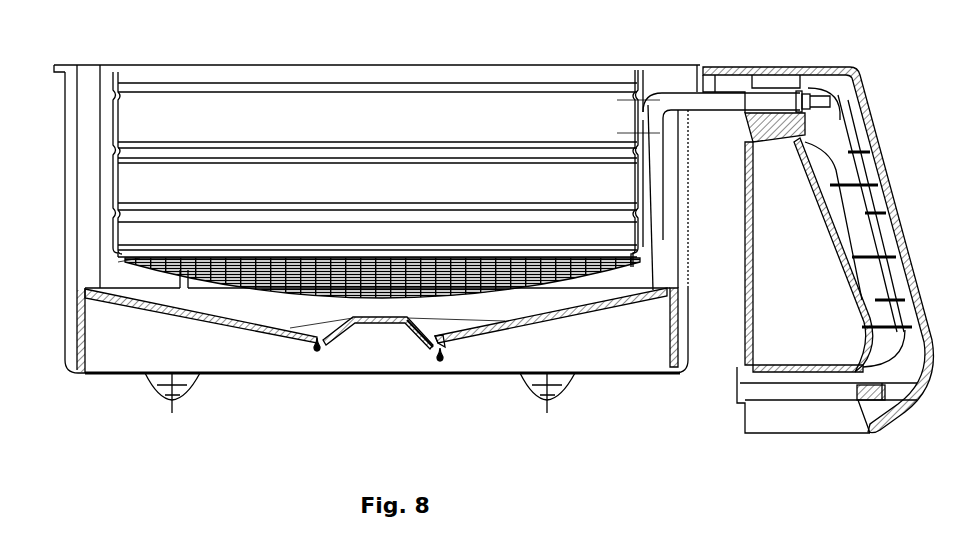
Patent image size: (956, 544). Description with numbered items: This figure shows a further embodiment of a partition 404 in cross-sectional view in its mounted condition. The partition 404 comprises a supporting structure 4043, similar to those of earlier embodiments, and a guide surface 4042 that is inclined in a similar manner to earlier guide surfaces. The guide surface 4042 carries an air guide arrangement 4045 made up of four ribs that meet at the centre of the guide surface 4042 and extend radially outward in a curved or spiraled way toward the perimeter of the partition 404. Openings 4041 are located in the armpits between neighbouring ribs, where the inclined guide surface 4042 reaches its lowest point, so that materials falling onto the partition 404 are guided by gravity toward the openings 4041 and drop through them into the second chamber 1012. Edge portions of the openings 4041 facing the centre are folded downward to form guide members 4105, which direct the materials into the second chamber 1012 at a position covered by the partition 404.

The partition 404 is at (353, 297).
The second chamber 1012 is at (138, 340).
The air guide arrangement 4045 is at (363, 332).
The guide member 4105 is at (434, 351).
The opening 4041 is at (445, 347).
The guide surface 4042 is at (600, 322).
The supporting structure 4043 is at (673, 374).